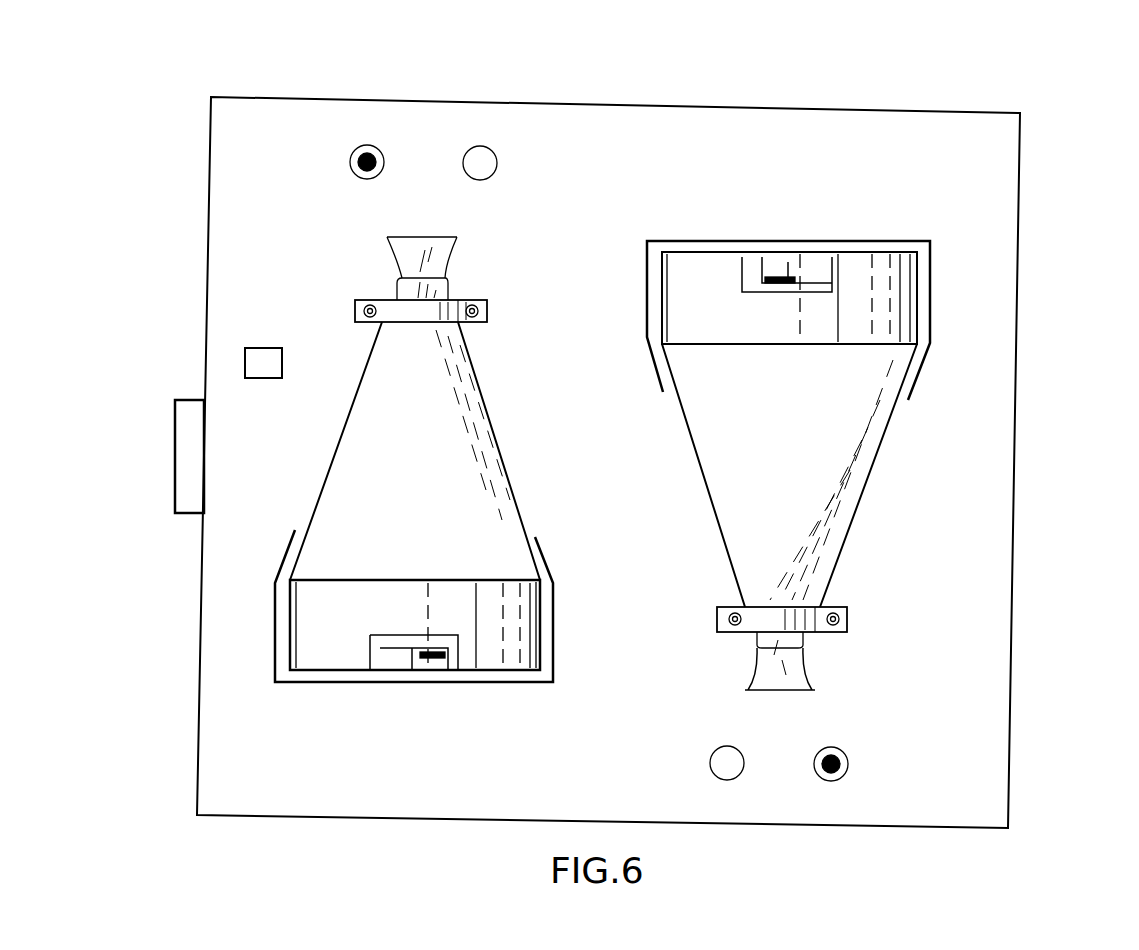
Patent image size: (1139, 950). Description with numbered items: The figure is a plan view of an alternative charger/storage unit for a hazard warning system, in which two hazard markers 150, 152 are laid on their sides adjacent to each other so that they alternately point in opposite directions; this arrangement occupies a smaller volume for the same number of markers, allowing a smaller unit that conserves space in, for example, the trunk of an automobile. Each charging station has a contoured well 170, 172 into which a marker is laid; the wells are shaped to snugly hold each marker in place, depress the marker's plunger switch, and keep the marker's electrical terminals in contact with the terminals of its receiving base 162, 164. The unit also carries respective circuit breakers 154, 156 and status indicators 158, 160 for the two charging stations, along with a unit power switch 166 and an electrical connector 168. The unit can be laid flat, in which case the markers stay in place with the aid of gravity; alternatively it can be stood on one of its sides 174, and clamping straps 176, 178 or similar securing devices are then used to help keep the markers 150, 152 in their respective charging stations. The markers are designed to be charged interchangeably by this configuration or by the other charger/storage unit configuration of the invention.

The hazard marker 150 is at (417, 498).
The hazard marker 152 is at (876, 428).
The circuit breaker 154 is at (350, 162).
The circuit breaker 156 is at (850, 772).
The status indicator 158 is at (497, 162).
The status indicator 160 is at (708, 765).
The receiving base 162 is at (398, 660).
The receiving base 164 is at (813, 257).
The unit power switch 166 is at (262, 348).
The electrical connector 168 is at (173, 452).
The contoured well 170 is at (282, 556).
The contoured well 172 is at (920, 375).
The side 174 is at (316, 98).
The clamping strap 176 is at (487, 310).
The clamping strap 178 is at (848, 618).